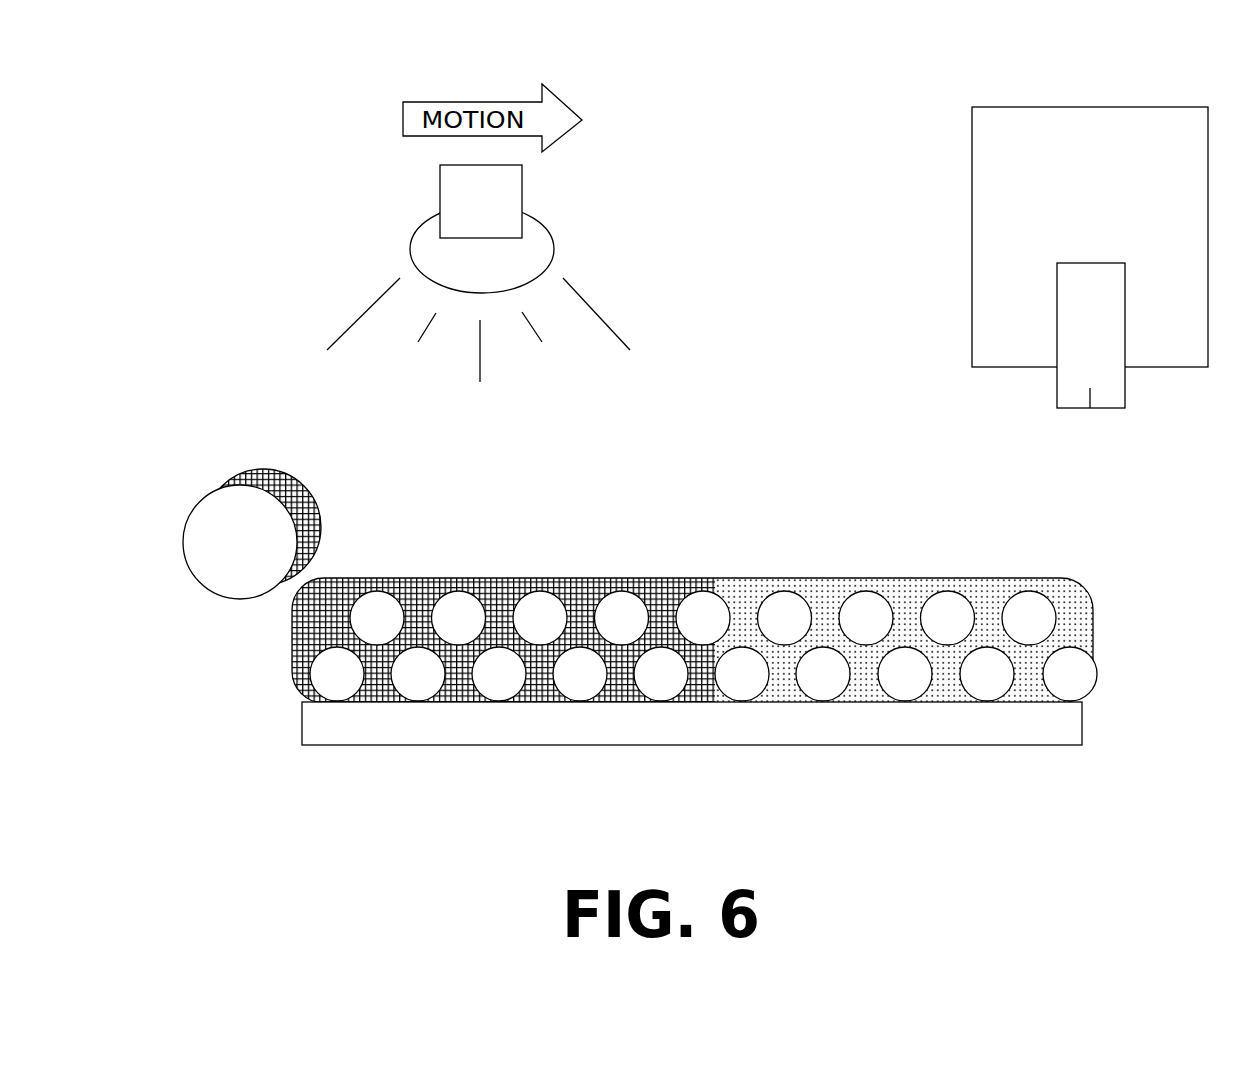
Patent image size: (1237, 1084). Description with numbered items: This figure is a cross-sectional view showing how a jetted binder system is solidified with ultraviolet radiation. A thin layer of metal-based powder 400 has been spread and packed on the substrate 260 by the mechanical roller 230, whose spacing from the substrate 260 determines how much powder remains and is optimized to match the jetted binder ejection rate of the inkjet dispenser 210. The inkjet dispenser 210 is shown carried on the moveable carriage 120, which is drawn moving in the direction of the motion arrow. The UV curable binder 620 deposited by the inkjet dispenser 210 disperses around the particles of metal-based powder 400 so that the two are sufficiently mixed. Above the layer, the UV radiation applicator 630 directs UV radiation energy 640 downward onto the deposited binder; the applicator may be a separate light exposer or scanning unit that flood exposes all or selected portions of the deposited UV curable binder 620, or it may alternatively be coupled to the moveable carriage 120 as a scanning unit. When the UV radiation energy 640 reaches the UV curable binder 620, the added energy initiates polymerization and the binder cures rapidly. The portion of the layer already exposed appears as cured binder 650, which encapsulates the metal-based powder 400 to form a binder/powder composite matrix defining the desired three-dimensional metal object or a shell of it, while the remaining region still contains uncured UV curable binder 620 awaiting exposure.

The moveable carriage 120 is at (1115, 148).
The inkjet dispenser 210 is at (1075, 330).
The mechanical roller 230 is at (242, 543).
The substrate 260 is at (930, 747).
The metal-based powder 400 is at (1028, 620).
The UV curable binder 620 is at (992, 590).
The UV radiation applicator 630 is at (423, 240).
The UV radiation energy 640 is at (597, 315).
The cured binder 650 is at (604, 562).